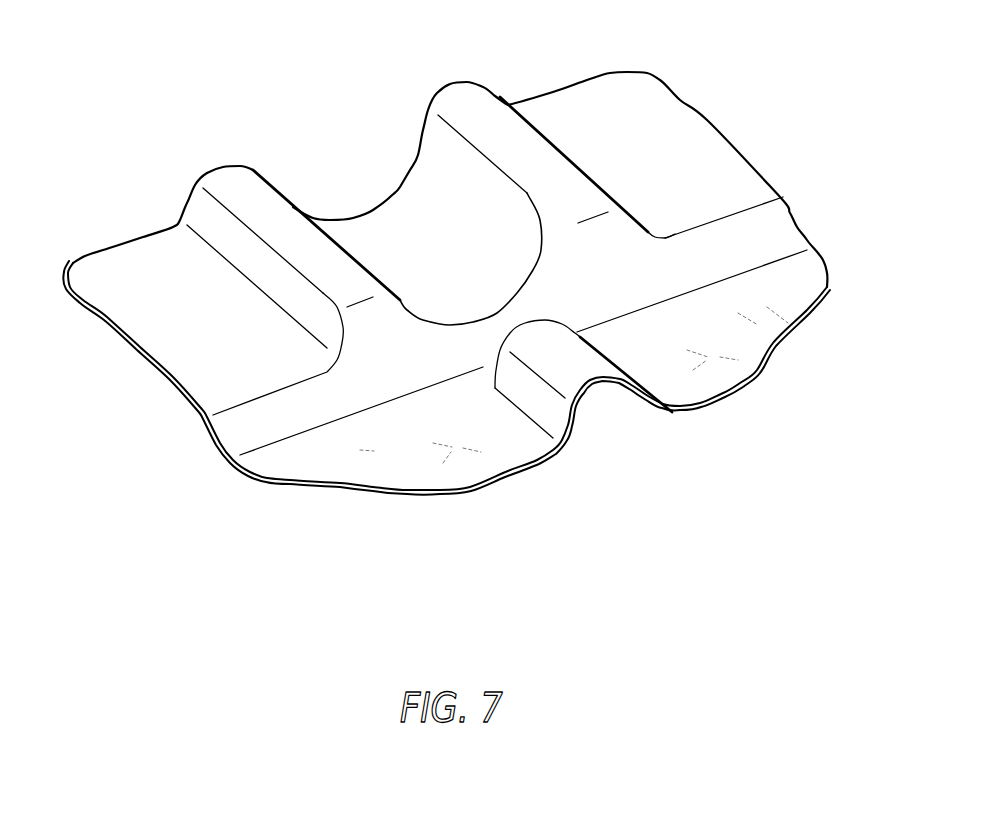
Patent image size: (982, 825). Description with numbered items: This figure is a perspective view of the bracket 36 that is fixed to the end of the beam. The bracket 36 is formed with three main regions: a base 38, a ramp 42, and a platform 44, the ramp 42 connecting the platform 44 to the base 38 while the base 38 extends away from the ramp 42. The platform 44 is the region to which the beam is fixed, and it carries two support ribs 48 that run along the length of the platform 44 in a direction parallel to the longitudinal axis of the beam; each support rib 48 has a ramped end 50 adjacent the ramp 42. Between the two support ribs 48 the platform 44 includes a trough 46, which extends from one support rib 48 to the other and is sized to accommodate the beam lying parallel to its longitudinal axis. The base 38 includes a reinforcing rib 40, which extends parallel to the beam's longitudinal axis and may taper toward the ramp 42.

The bracket 36 is at (715, 127).
The base 38 is at (420, 452).
The reinforcing rib 40 is at (583, 380).
The ramp 42 is at (272, 413).
The platform 44 is at (138, 268).
The trough 46 is at (407, 247).
The support ribs 48 is at (222, 193).
The ramped ends 50 is at (380, 325).